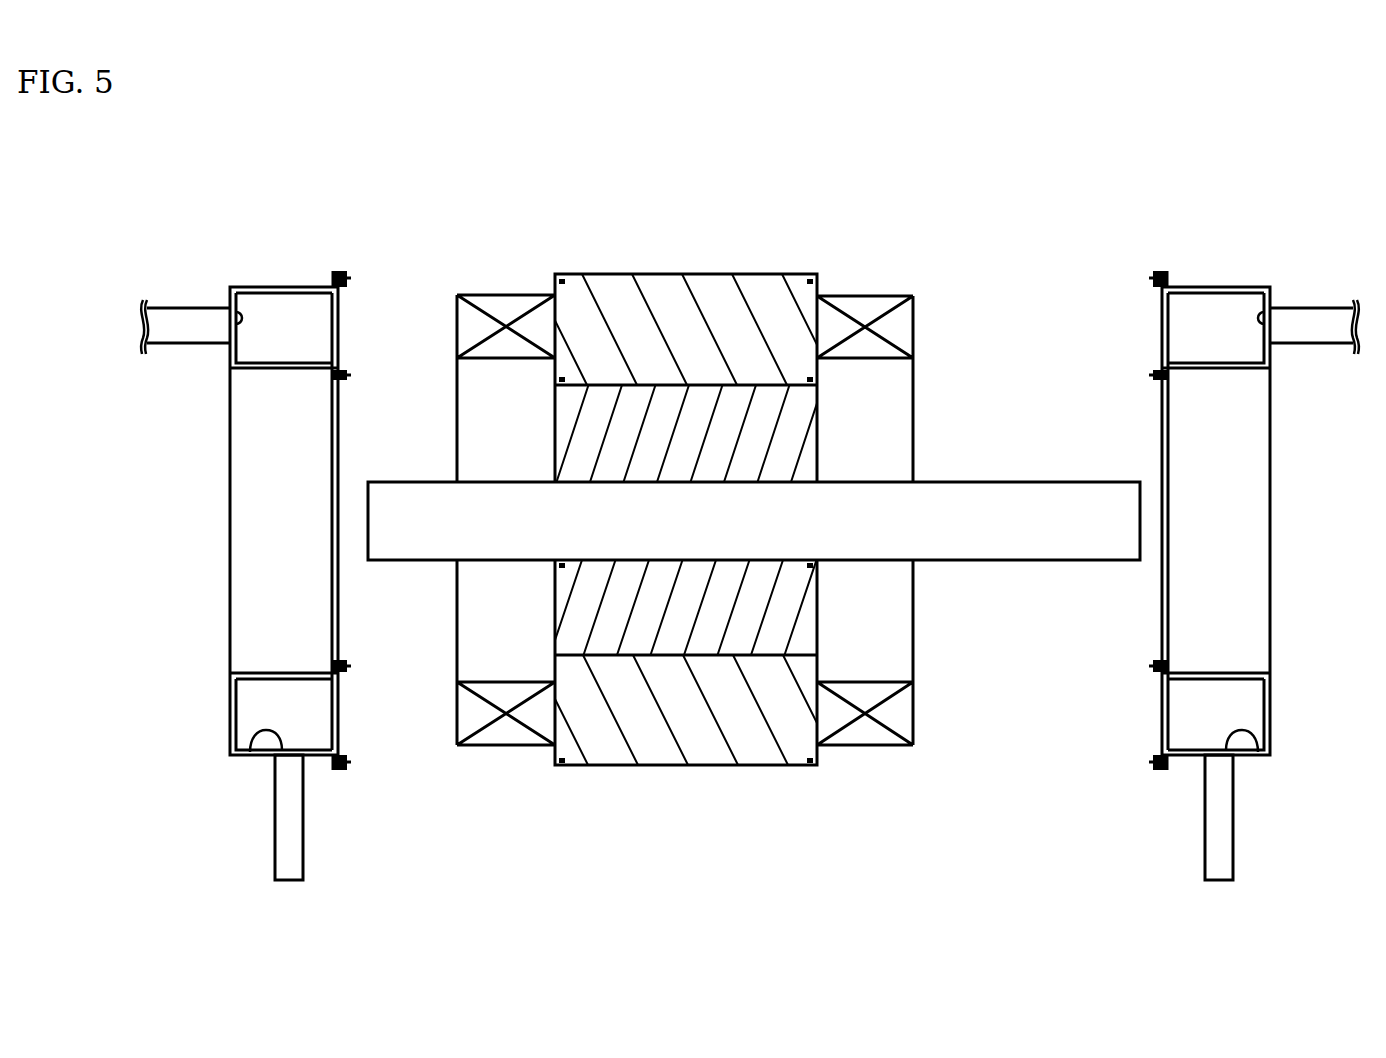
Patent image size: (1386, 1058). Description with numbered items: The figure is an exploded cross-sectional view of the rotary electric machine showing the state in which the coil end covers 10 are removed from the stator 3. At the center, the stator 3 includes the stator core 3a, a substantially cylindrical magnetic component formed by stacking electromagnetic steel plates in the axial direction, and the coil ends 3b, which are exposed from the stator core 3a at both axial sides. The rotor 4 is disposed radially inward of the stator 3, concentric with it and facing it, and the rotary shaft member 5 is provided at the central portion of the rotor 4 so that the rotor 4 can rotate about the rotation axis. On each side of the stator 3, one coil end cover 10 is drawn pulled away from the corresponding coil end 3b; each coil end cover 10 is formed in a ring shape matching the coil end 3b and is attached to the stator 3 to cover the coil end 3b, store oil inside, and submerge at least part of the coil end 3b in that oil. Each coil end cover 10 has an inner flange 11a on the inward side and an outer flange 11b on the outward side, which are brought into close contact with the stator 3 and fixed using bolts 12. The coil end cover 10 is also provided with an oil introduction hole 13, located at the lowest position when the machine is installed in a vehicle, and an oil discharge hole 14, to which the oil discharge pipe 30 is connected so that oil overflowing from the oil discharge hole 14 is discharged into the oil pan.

The stator 3 is at (661, 459).
The stator core 3a is at (785, 274).
The coil end 3b is at (747, 208).
The rotor 4 is at (817, 437).
The rotary shaft member 5 is at (1027, 482).
The coil end cover 10 is at (230, 527).
The inner flange 11a is at (332, 555).
The outer flange 11b is at (333, 284).
The bolt 12 is at (337, 277).
The oil introduction hole 13 is at (258, 752).
The oil discharge hole 14 is at (232, 325).
The oil discharge pipe 30 is at (185, 308).